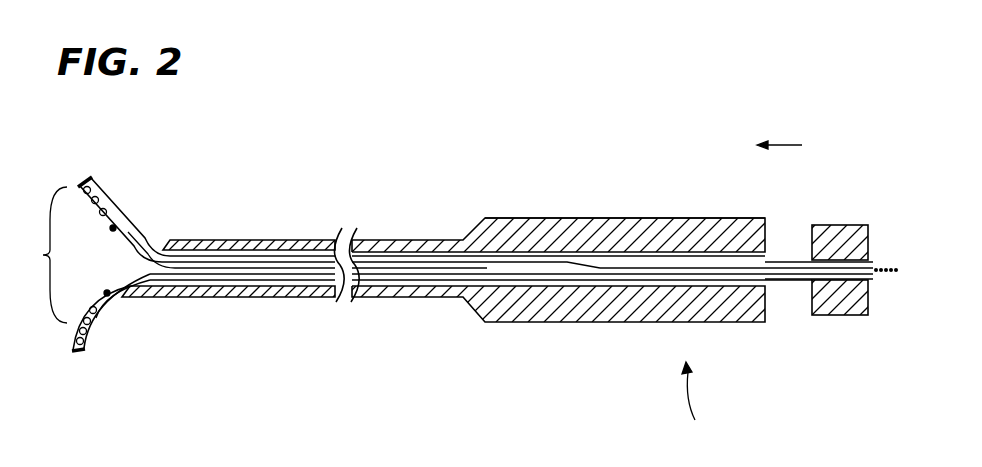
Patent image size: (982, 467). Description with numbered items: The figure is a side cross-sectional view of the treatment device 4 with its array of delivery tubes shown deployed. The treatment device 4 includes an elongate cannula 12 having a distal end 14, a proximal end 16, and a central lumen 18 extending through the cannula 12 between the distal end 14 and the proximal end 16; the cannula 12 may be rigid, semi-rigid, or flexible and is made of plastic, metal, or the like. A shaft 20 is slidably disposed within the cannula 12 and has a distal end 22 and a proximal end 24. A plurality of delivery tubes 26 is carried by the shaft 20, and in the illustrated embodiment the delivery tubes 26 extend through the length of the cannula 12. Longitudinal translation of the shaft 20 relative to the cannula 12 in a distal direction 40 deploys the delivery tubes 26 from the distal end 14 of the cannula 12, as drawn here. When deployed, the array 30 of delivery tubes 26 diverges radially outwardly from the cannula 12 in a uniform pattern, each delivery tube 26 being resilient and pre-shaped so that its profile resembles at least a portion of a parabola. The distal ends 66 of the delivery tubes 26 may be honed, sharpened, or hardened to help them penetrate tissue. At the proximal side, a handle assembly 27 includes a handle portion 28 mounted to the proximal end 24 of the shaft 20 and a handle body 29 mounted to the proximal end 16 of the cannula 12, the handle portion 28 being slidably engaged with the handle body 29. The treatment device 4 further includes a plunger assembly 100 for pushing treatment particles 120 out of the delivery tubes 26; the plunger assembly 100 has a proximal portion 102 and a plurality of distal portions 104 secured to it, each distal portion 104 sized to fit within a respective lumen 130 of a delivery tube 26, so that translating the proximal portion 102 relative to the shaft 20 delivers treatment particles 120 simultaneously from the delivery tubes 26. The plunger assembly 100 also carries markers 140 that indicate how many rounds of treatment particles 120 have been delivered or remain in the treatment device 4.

The treatment device 4 is at (693, 402).
The elongate cannula 12 is at (318, 240).
The distal end 14 is at (244, 240).
The proximal end 16 is at (450, 240).
The central lumen 18 is at (280, 262).
The shaft 20 is at (553, 262).
The distal end 22 is at (492, 257).
The proximal end 24 is at (800, 282).
The delivery tubes 26 is at (124, 226).
The handle assembly 27 is at (835, 226).
The handle portion 28 is at (858, 225).
The handle body 29 is at (648, 218).
The array 30 is at (35, 255).
The distal direction 40 is at (779, 131).
The distal ends 66 is at (85, 178).
The plunger assembly 100 is at (780, 282).
The proximal portion 102 is at (620, 280).
The distal portions 104 is at (540, 275).
The treatment particles 120 is at (116, 226).
The lumen 130 is at (148, 243).
The markers 140 is at (880, 278).